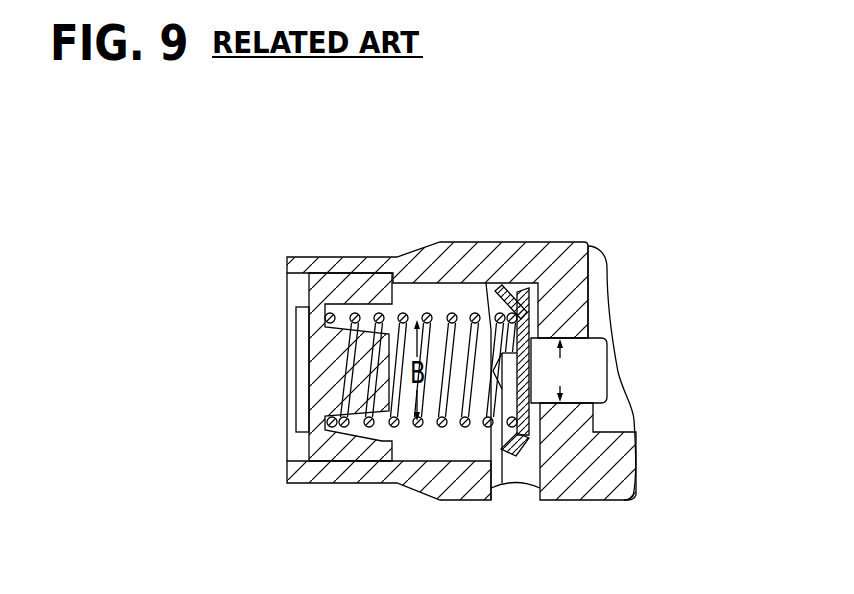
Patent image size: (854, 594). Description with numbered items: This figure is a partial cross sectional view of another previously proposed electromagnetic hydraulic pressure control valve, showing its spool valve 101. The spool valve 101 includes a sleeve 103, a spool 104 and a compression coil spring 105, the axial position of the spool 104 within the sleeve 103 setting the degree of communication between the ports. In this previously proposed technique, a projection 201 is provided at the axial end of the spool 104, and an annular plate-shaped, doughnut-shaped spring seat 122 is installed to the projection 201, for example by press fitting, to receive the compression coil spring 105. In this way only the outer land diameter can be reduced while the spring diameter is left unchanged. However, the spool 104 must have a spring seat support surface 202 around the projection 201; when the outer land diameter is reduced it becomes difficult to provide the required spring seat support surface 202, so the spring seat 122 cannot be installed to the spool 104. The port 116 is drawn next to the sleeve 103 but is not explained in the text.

The spool valve 101 is at (424, 221).
The sleeve 103 is at (575, 295).
The spool 104 is at (590, 366).
The compression coil spring 105 is at (389, 303).
The port 116 is at (649, 368).
The projection 201 is at (497, 294).
The spring seat support surface 202 is at (530, 291).
The spring seat 122 is at (519, 435).